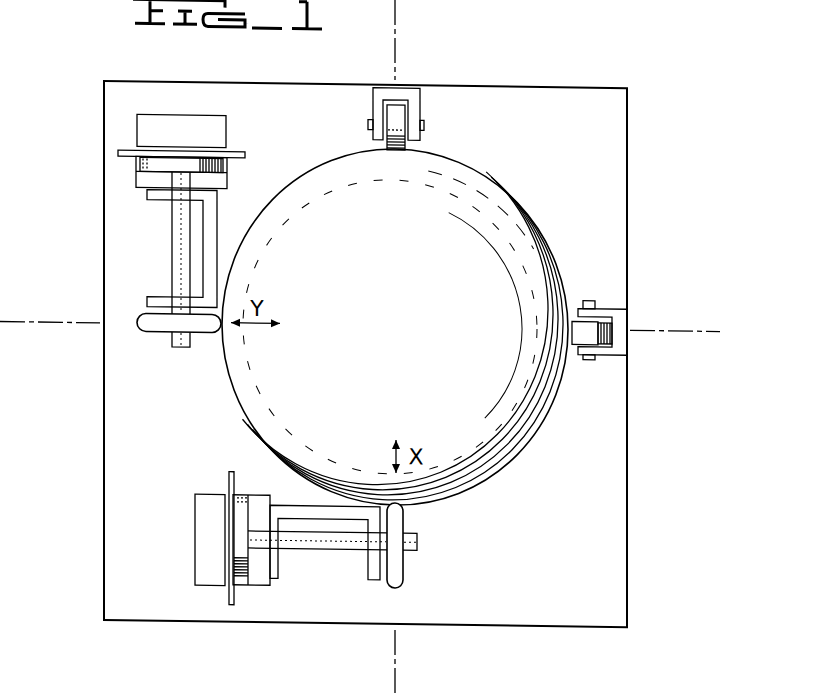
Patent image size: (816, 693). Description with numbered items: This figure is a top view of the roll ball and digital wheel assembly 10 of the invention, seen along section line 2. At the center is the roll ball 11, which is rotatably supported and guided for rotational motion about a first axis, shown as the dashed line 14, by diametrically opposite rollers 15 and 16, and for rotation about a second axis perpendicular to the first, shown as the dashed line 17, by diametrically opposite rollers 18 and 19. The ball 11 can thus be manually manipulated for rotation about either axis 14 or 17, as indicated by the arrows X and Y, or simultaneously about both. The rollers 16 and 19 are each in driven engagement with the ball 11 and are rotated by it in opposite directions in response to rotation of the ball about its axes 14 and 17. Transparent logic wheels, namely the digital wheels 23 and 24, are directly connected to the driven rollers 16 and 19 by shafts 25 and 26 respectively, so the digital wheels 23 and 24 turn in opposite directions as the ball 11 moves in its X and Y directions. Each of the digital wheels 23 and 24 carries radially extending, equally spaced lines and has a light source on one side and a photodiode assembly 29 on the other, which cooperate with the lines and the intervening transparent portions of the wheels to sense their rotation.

The section line 2- 2 is at (85, 52).
The roll ball and digital wheel assembly 10 is at (668, 291).
The roll ball 11 is at (438, 263).
The first axis 14 is at (680, 327).
The roller 15 is at (400, 125).
The driven roller 16 is at (404, 570).
The second axis 17 is at (398, 652).
The roller 18 is at (590, 350).
The driven roller 19 is at (197, 338).
The digital wheel 23 is at (228, 594).
The digital wheel 24 is at (236, 153).
The shaft 25 is at (321, 546).
The shaft 26 is at (171, 243).
The photodiode assembly 29 is at (200, 112).